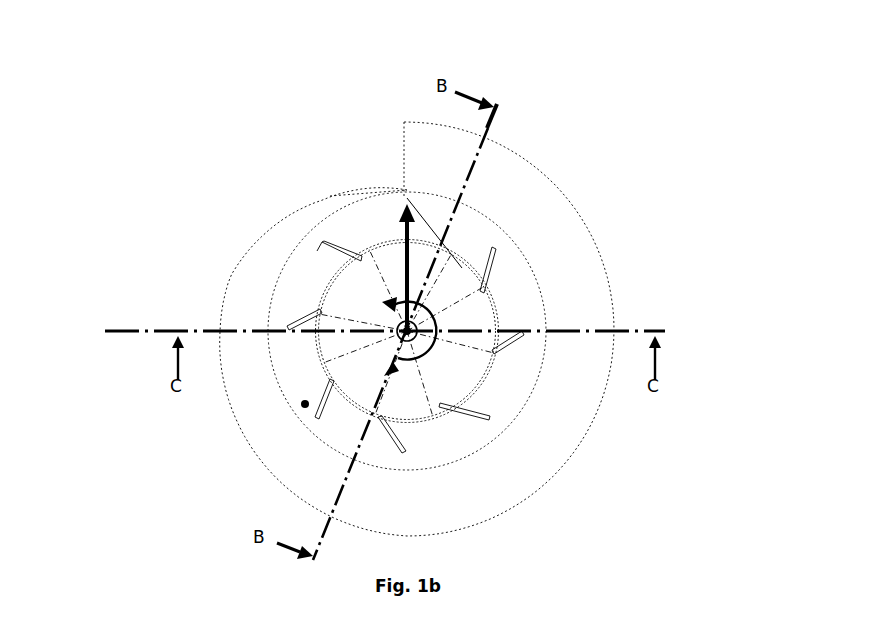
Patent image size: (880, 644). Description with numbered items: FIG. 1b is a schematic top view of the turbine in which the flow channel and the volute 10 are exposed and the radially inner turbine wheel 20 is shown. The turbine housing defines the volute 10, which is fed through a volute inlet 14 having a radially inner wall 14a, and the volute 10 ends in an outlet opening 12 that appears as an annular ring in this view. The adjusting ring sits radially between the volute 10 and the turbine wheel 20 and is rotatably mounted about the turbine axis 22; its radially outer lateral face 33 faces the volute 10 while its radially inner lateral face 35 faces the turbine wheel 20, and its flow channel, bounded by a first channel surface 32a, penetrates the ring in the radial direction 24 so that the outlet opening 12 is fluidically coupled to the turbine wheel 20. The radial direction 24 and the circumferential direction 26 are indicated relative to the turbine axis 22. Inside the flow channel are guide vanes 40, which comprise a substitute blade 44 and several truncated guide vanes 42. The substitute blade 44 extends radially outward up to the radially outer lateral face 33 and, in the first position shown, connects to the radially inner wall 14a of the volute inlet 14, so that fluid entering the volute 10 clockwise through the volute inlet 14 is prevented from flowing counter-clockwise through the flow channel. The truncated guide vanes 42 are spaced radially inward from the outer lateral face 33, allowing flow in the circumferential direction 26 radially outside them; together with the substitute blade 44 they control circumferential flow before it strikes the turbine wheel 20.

The volute 10 is at (515, 200).
The outlet opening 12 is at (543, 317).
The volute inlet 14 is at (404, 150).
The radially inner wall 14a is at (372, 186).
The turbine wheel 20 is at (455, 353).
The turbine axis 22 is at (305, 404).
The radial direction 24 is at (425, 268).
The circumferential direction 26 is at (425, 312).
The first channel surface 32a is at (320, 352).
The radially outer lateral face 33 is at (470, 455).
The radially inner lateral face 35 is at (470, 392).
The guide vanes 40 is at (224, 239).
The truncated guide vanes 42 is at (358, 258).
The substitute blade 44 is at (400, 199).